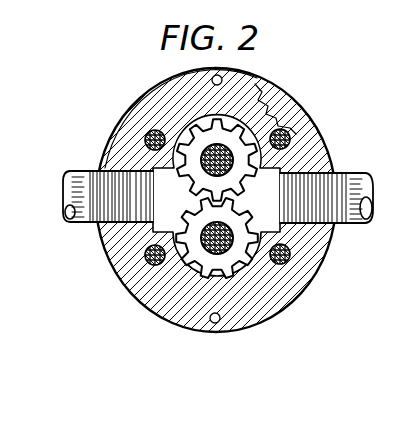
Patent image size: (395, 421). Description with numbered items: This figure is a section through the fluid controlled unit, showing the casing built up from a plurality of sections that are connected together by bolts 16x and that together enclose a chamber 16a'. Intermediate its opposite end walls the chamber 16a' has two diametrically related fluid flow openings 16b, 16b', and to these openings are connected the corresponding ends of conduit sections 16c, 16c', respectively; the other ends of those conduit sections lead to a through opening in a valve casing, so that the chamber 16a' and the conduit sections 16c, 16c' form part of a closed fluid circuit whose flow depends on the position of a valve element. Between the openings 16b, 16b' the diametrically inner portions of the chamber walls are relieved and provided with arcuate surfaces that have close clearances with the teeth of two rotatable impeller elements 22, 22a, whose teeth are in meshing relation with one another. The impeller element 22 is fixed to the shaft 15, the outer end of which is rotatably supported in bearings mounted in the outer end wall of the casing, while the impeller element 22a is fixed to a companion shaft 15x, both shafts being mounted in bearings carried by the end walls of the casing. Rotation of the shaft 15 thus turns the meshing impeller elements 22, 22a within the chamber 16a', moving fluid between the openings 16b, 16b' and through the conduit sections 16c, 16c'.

The shaft 15 is at (212, 252).
The companion shaft 15x is at (210, 166).
The impeller element 22 is at (168, 311).
The impeller element 22a is at (265, 88).
The bolts 16x is at (303, 125).
The chamber 16a' is at (321, 127).
The fluid flow opening 16b is at (108, 271).
The fluid flow opening 16b' is at (320, 267).
The conduit section 16c is at (330, 175).
The conduit section 16c' is at (102, 220).